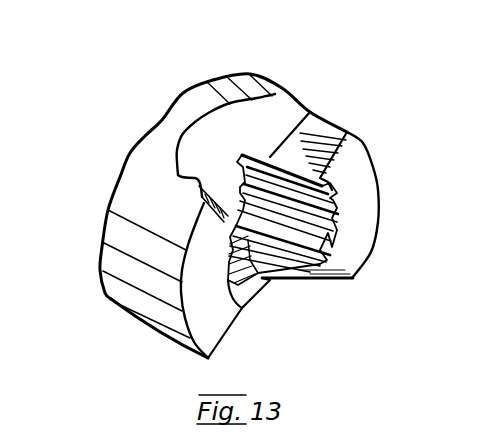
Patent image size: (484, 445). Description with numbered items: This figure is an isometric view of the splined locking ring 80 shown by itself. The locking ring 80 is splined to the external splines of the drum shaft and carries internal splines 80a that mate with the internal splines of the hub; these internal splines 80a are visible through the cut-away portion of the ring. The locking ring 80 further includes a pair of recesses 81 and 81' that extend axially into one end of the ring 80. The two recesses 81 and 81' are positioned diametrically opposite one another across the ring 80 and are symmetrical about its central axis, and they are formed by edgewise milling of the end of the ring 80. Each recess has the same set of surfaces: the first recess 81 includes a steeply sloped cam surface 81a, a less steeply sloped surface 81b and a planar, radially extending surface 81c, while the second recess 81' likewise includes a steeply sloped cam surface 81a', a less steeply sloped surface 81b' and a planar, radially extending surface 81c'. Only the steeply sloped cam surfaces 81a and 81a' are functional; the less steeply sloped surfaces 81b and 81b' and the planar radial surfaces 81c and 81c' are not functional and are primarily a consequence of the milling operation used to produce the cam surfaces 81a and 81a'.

The splined locking ring 80 is at (182, 93).
The internal splines 80a is at (340, 216).
The recess 81 is at (226, 93).
The steeply sloped cam surface 81a is at (126, 180).
The less steeply sloped surface 81b is at (298, 98).
The planar, radially extending surface 81c is at (358, 133).
The recess 81' is at (256, 297).
The steeply sloped cam surface 81a' is at (340, 301).
The less steeply sloped surface 81b' is at (294, 307).
The planar, radially extending surface 81c' is at (242, 329).